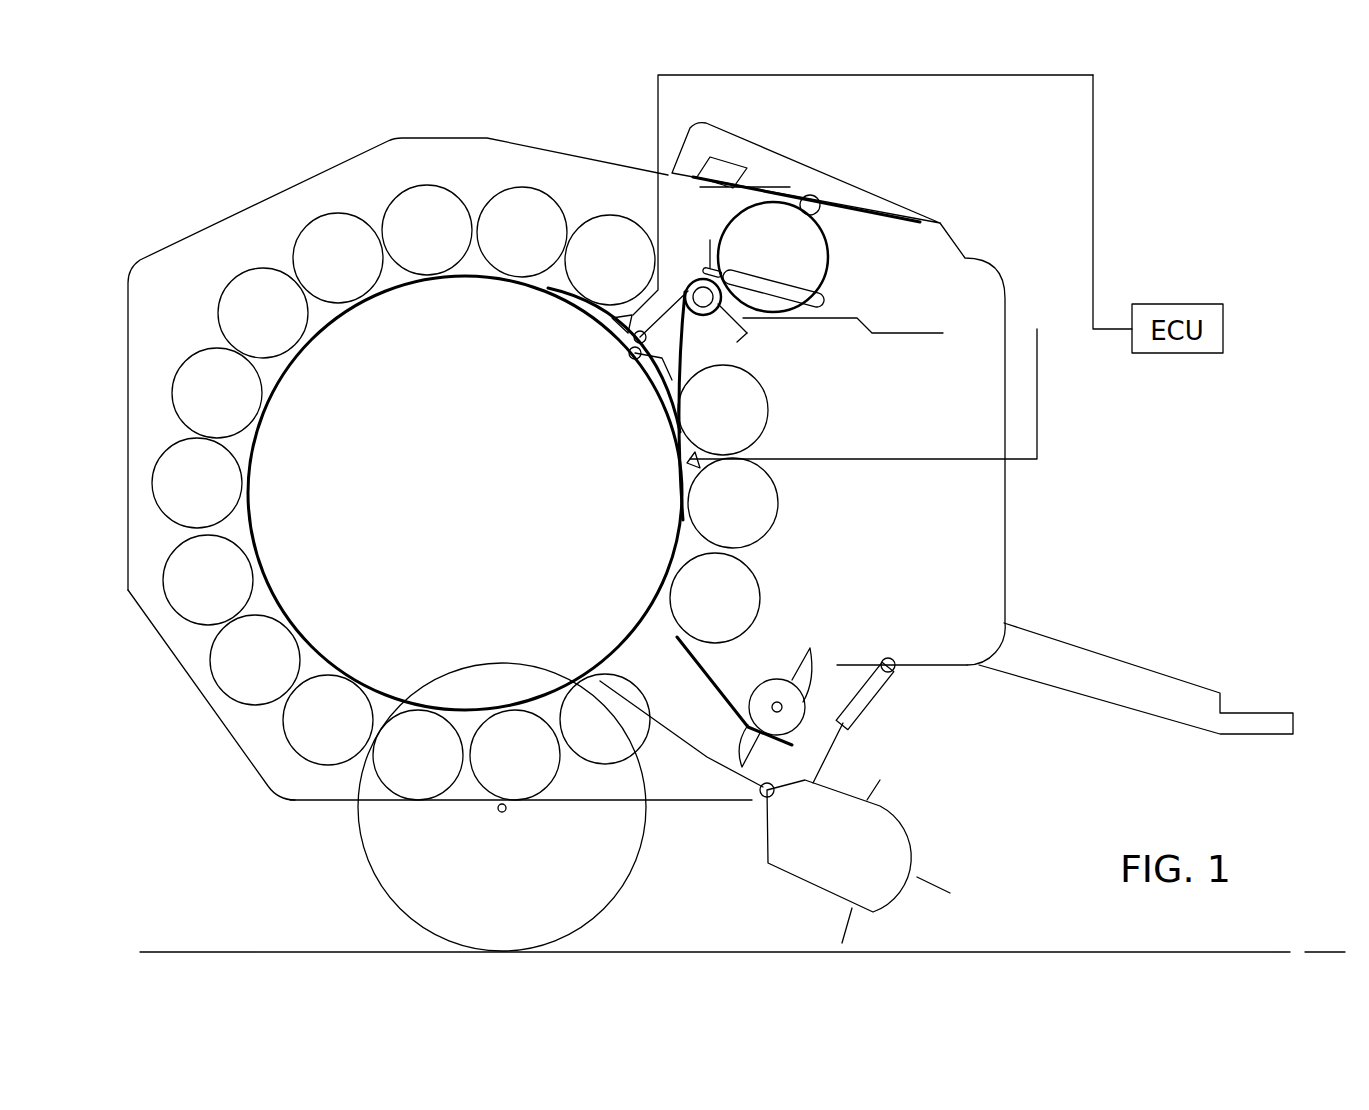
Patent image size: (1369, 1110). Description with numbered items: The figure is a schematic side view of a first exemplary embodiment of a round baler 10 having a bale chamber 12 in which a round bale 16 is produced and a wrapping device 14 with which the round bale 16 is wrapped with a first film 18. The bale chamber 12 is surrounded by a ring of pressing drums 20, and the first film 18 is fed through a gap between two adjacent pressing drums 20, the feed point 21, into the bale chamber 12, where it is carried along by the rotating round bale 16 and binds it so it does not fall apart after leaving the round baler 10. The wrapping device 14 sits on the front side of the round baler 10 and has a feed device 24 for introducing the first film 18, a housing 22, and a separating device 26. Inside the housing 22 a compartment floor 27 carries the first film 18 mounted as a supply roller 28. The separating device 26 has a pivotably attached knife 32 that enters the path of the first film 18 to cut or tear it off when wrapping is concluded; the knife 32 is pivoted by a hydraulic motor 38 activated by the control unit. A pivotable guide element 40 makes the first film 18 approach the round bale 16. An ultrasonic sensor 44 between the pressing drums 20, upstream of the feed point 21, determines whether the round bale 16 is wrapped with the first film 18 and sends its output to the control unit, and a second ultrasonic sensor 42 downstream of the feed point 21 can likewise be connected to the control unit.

The round baler 10 is at (1041, 494).
The bale chamber 12 is at (194, 305).
The wrapping device 14 is at (931, 247).
The round bale 16 is at (484, 535).
The first film 18 is at (690, 372).
The pressing drums 20 is at (405, 187).
The feed point 21 is at (649, 418).
The housing 22 is at (782, 152).
The feed device 24 is at (693, 276).
The separating device 26 is at (755, 364).
The compartment floor 27 is at (907, 334).
The supply roller 28 is at (787, 262).
The knife 32 is at (740, 342).
The hydraulic motor 38 is at (826, 291).
The guide element 40 is at (631, 358).
The second ultrasonic sensor 42 is at (686, 462).
The ultrasonic sensor 44 is at (615, 336).